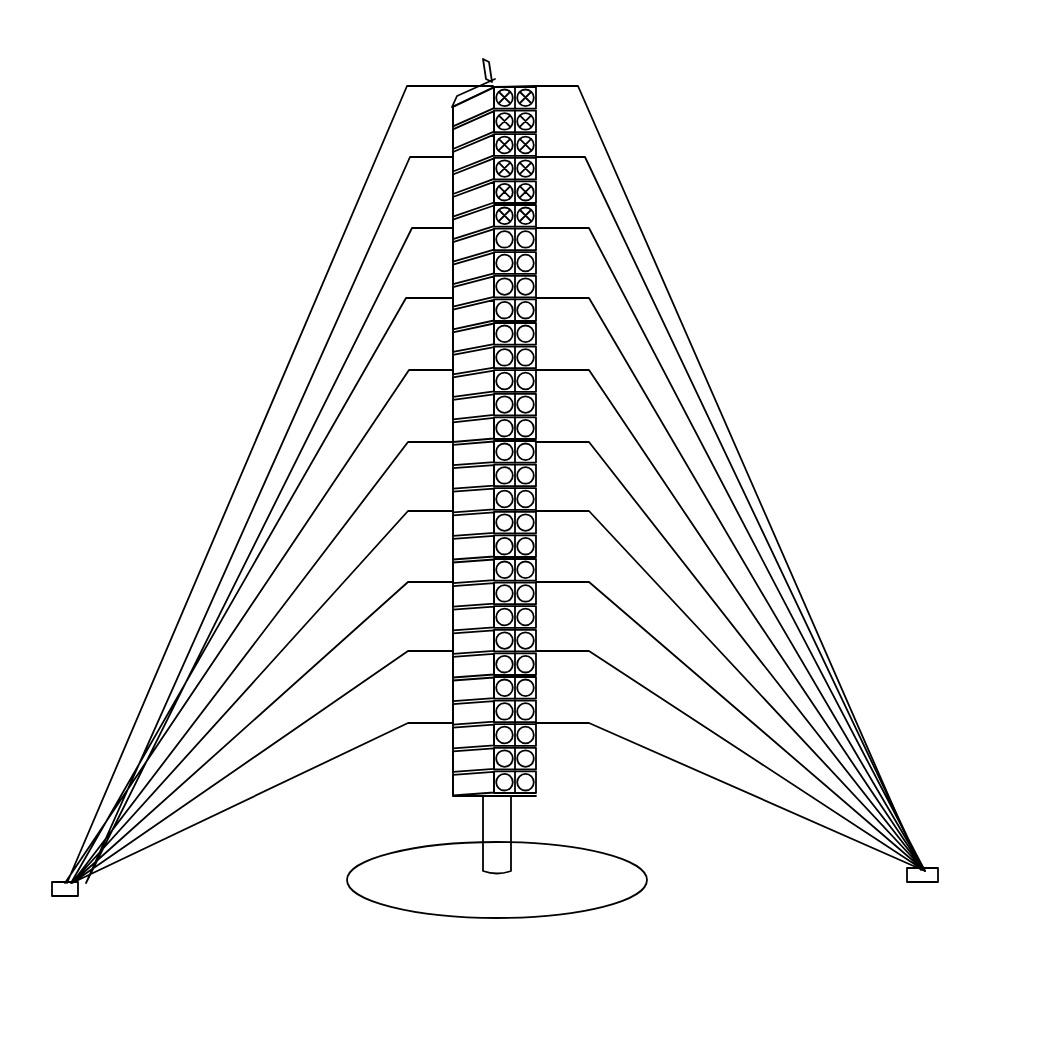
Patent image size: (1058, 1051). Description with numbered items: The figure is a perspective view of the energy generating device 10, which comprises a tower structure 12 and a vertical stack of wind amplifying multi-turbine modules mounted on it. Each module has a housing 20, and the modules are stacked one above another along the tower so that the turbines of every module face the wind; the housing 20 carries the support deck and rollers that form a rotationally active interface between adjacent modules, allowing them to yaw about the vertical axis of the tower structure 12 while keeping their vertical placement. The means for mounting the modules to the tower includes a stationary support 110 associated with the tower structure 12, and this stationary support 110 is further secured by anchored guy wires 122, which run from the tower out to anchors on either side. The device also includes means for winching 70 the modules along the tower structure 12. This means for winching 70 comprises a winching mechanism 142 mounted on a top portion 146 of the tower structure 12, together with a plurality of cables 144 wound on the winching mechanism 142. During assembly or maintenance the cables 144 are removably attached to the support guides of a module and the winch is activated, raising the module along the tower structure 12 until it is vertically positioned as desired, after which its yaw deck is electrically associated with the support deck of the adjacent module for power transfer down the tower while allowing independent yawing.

The energy generating device 10 is at (662, 230).
The tower structure 12 is at (405, 797).
The housing 20 is at (467, 172).
The means for winching 70 is at (525, 68).
The stationary support 110 is at (512, 822).
The anchored guy wires 122 is at (736, 456).
The winching mechanism 142 is at (490, 58).
The cables 144 is at (490, 80).
The top portion 146 is at (517, 92).